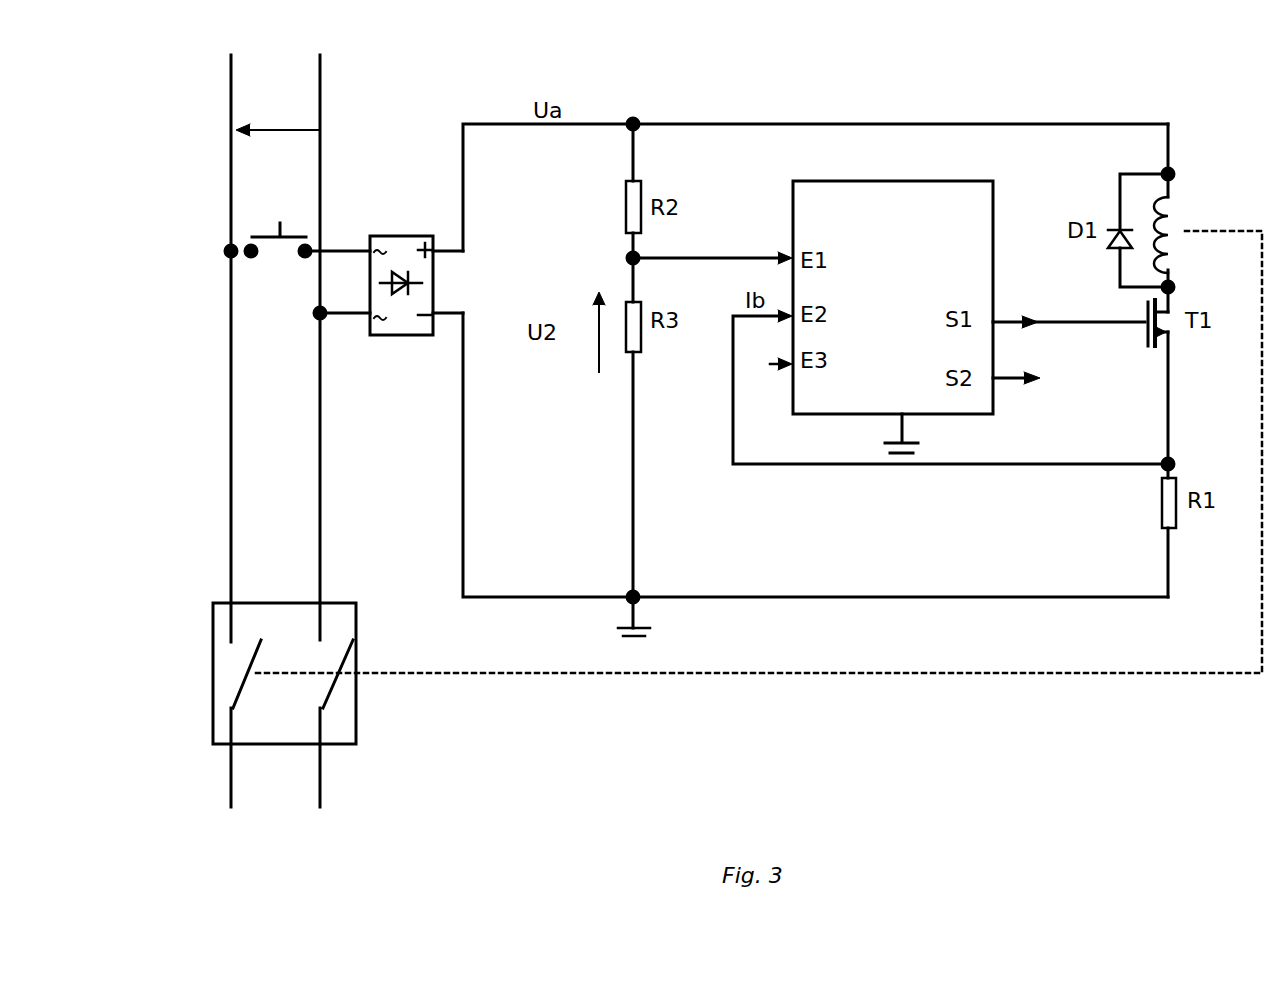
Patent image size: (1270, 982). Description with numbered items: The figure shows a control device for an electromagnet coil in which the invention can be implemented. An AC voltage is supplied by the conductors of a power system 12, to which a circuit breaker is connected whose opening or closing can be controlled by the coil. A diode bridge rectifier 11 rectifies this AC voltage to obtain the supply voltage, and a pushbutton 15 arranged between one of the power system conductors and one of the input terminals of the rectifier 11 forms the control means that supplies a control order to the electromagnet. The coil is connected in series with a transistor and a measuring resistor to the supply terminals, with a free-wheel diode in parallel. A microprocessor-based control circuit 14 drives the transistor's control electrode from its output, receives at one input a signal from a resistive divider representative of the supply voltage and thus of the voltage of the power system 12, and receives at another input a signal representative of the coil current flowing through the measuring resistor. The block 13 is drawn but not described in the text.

The diode bridge rectifier 11 is at (382, 335).
The power system 12 is at (317, 72).
The switch unit 13 is at (345, 723).
The control circuit 14 is at (960, 196).
The pushbutton 15 is at (297, 226).